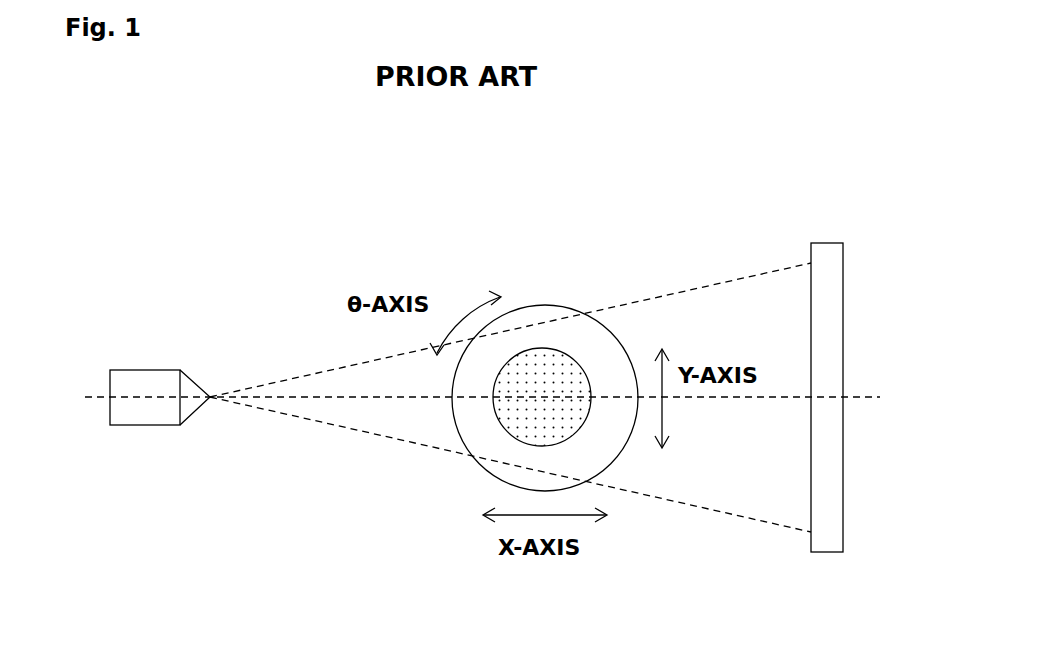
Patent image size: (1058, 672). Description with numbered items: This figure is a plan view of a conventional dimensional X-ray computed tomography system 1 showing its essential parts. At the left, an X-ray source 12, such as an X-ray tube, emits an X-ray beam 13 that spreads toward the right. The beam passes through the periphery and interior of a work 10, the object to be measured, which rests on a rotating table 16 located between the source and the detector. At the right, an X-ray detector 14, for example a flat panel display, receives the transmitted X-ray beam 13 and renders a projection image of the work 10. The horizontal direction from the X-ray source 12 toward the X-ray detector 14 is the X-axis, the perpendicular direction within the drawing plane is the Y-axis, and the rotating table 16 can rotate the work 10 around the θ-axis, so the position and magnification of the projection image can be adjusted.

The dimensional X-ray computed tomography system 1 is at (358, 187).
The work 10 is at (541, 378).
The X-ray source 12 is at (143, 370).
The X-ray beam 13 is at (337, 425).
The X-ray detector 14 is at (811, 543).
The rotating table 16 is at (525, 312).